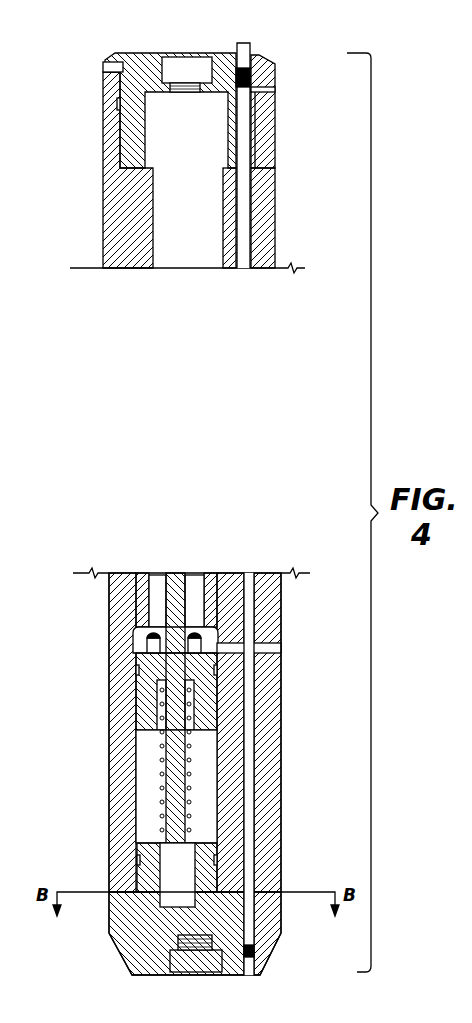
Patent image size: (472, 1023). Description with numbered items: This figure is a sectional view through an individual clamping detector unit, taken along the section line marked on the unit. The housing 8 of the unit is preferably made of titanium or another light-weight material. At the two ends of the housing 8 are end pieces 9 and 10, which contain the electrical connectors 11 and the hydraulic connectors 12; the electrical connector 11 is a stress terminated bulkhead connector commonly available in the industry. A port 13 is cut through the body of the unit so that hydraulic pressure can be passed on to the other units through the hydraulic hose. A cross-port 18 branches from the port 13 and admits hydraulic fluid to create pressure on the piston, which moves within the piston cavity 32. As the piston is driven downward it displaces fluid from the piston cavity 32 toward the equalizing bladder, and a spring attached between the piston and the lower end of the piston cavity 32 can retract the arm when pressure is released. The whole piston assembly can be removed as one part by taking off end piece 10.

The housing 8 is at (275, 147).
The end piece 9 is at (273, 72).
The end piece 10 is at (260, 962).
The electrical connector 11 is at (187, 46).
The hydraulic connector 12 is at (238, 47).
The port 13 is at (255, 188).
The cross-port 18 is at (281, 643).
The piston cavity 32 is at (208, 768).